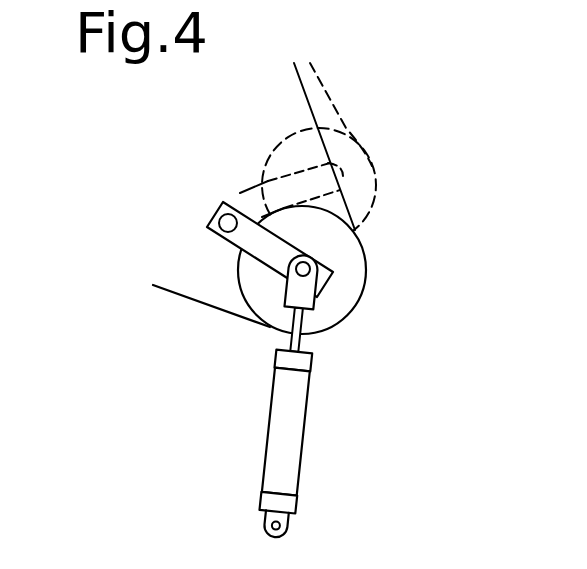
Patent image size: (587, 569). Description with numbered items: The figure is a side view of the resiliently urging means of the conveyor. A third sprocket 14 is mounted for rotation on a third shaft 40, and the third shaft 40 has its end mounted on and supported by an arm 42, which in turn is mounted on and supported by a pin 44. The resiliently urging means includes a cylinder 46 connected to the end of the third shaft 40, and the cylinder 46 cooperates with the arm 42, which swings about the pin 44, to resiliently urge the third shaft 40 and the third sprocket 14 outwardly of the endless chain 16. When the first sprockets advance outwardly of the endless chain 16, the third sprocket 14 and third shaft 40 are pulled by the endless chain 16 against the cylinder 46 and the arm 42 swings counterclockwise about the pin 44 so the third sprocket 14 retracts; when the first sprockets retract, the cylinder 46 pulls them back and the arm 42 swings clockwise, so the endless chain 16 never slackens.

The third sprocket 14 is at (366, 289).
The endless chain 16 is at (173, 293).
The third shaft 40 is at (335, 254).
The arm 42 is at (242, 251).
The pin 44 is at (213, 216).
The cylinder means 46 is at (292, 428).